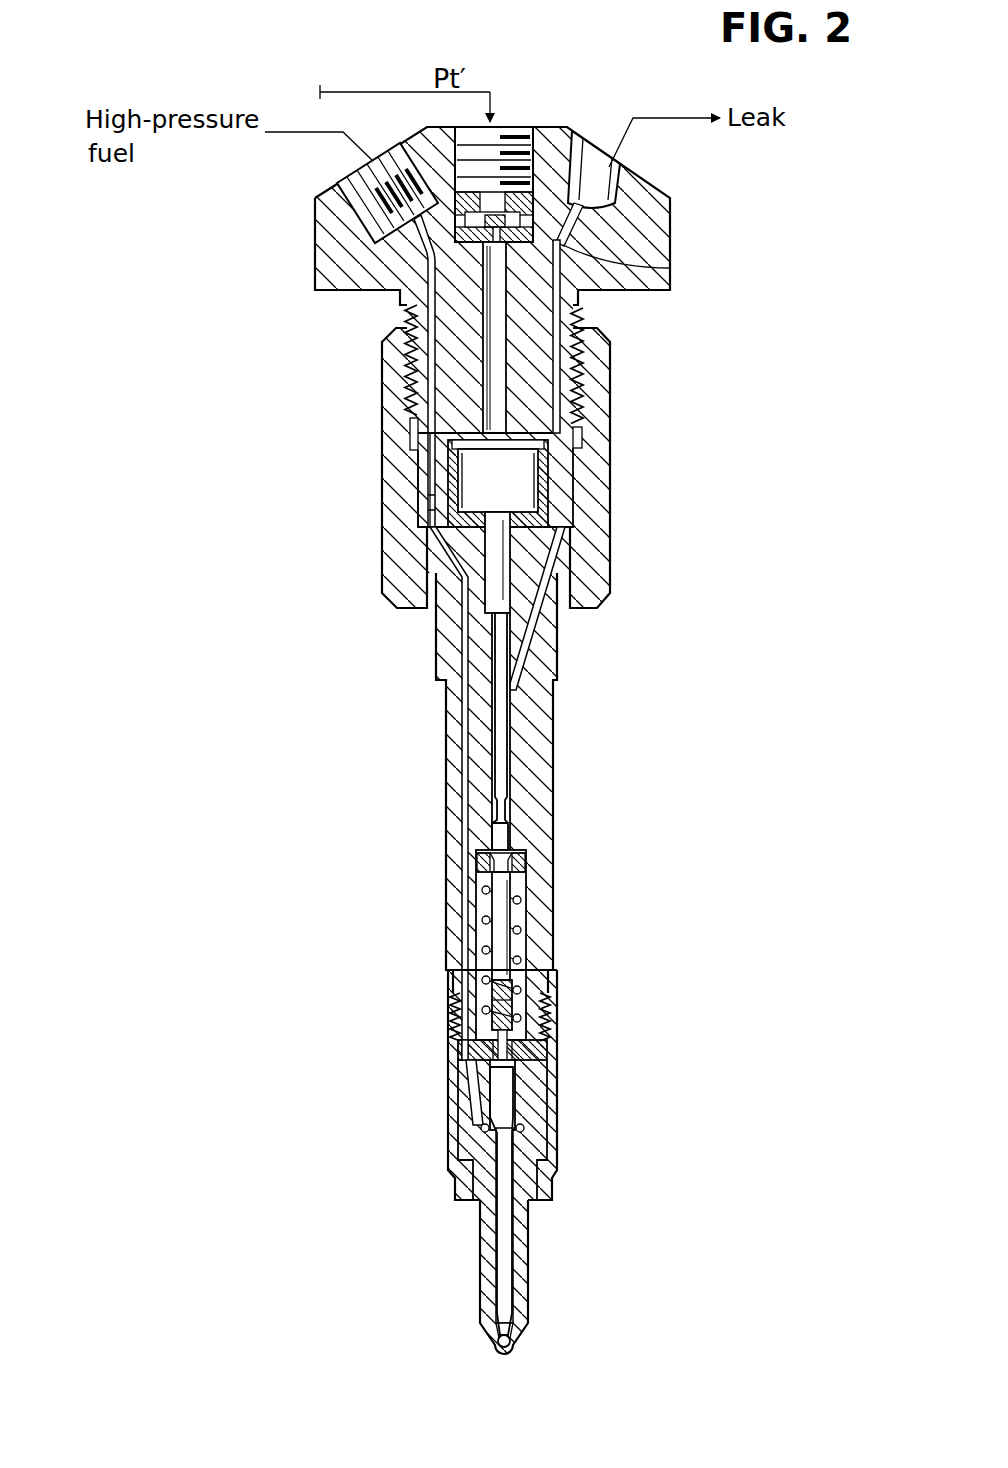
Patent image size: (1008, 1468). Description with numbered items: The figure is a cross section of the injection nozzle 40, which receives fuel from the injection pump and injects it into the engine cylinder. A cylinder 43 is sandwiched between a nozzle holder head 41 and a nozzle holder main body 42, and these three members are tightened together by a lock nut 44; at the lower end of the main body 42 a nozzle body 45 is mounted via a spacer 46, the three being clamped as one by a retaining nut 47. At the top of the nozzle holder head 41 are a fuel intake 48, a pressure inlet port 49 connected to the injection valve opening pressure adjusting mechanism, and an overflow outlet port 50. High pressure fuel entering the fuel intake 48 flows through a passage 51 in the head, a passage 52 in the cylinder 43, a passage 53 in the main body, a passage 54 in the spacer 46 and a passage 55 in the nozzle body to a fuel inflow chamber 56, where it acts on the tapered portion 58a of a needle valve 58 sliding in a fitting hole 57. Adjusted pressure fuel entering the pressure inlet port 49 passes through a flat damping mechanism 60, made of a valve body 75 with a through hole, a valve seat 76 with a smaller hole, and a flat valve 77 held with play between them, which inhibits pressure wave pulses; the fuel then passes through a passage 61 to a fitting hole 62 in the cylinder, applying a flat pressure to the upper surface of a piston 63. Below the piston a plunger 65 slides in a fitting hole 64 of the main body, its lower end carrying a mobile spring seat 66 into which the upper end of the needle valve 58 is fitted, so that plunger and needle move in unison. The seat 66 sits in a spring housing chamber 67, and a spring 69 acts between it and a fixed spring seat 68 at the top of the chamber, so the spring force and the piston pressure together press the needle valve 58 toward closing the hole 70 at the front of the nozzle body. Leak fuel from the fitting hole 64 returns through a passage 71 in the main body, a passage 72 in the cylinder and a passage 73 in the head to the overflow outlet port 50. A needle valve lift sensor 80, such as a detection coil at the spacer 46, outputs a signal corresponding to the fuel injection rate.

The injection nozzle 40 is at (652, 571).
The nozzle holder head 41 is at (652, 232).
The nozzle holder main body 42 is at (545, 770).
The cylinder 43 is at (418, 470).
The lock nut 44 is at (388, 400).
The nozzle body 45 is at (540, 1093).
The spacer 46 is at (548, 1048).
The retaining nut 47 is at (463, 1185).
The fuel intake 48 is at (352, 186).
The pressure inlet port 49 is at (504, 145).
The overflow outlet port 50 is at (616, 170).
The passage 51 is at (432, 357).
The passage 52 is at (432, 502).
The passage 53 is at (462, 713).
The passage 54 is at (458, 1050).
The passage 55 is at (468, 1078).
The fuel inflow chamber 56 is at (523, 1128).
The fitting hole 57 is at (513, 1187).
The needle valve 58 is at (513, 1253).
The tapered portion 58a is at (483, 1128).
The flat damping mechanism 60 is at (536, 193).
The passage 61 is at (507, 358).
The fitting hole 62 is at (545, 473).
The piston 63 is at (543, 500).
The fitting hole 64 is at (507, 730).
The plunger 65 is at (495, 770).
The mobile spring seat 66 is at (509, 1000).
The spring housing chamber 67 is at (527, 942).
The fixed spring seat 68 is at (511, 853).
The spring 69 is at (518, 900).
The hole 70 is at (511, 1349).
The passage 71 is at (524, 633).
The passage 72 is at (560, 455).
The passage 73 is at (572, 310).
The valve body 75 is at (430, 160).
The valve seat 76 is at (672, 268).
The flat valve 77 is at (592, 166).
The needle valve lift sensor 80 is at (528, 1032).